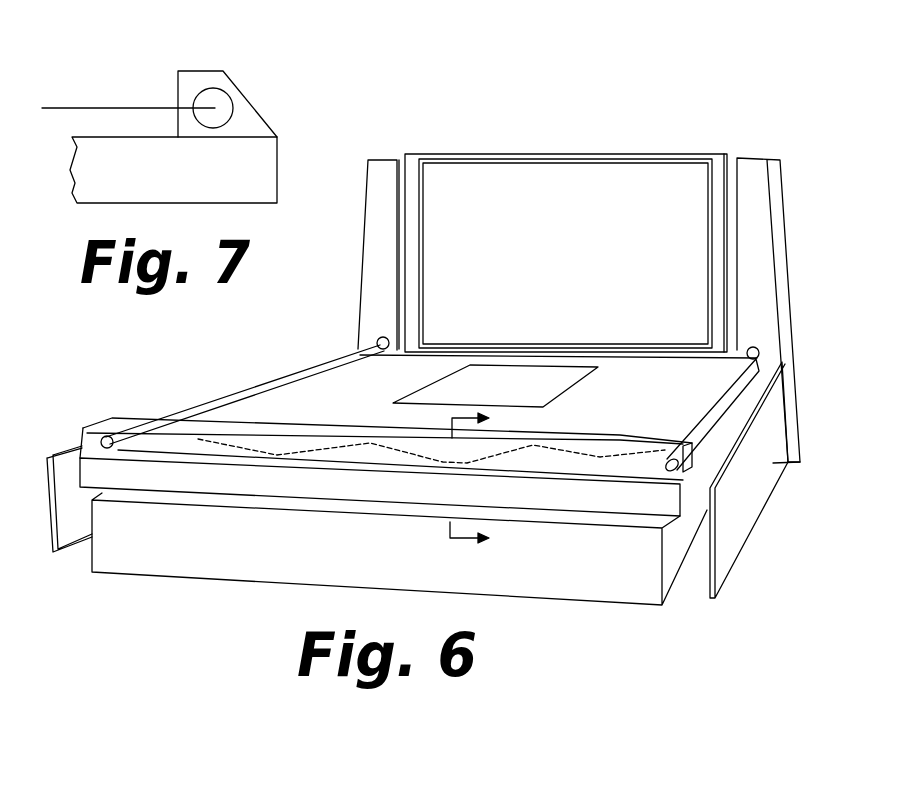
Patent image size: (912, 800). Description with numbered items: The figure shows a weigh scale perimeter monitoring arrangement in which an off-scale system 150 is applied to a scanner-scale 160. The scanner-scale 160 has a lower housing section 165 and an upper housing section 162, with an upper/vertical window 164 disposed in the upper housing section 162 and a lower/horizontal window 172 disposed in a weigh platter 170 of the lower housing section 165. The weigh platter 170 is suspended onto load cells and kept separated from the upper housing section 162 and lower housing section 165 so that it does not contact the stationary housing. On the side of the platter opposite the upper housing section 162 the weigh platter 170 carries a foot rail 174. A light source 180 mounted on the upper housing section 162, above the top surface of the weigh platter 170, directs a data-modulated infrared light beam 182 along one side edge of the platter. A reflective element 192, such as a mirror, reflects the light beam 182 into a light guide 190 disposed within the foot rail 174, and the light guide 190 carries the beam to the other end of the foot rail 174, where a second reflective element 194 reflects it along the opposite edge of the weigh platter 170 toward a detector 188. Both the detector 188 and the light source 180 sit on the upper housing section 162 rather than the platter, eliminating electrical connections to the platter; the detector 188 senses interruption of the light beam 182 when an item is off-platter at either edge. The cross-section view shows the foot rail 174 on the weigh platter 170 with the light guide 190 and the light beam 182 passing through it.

In FIG. 6, the off-scale system 150 is at (692, 111).
In FIG. 6, the scanner-scale 160 is at (729, 152).
In FIG. 6, the upper housing section 162 is at (577, 152).
In FIG. 6, the upper/vertical window 164 is at (507, 183).
In FIG. 6, the lower housing section 165 is at (745, 468).
In FIG. 7, the weigh platter 170 is at (242, 160).
In FIG. 6, the weigh platter 170 is at (123, 470).
In FIG. 6, the lower/horizontal window 172 is at (538, 382).
In FIG. 7, the foot rail 174 is at (257, 112).
In FIG. 6, the foot rail 174 is at (107, 442).
In FIG. 6, the light source 180 is at (383, 337).
In FIG. 7, the light beam 182 is at (83, 108).
In FIG. 6, the light beam 182 is at (147, 422).
In FIG. 6, the detector 188 is at (756, 346).
In FIG. 7, the light guide 190 is at (213, 88).
In FIG. 6, the light guide 190 is at (386, 488).
In FIG. 6, the reflective element 192 is at (64, 446).
In FIG. 6, the reflective element 194 is at (677, 470).